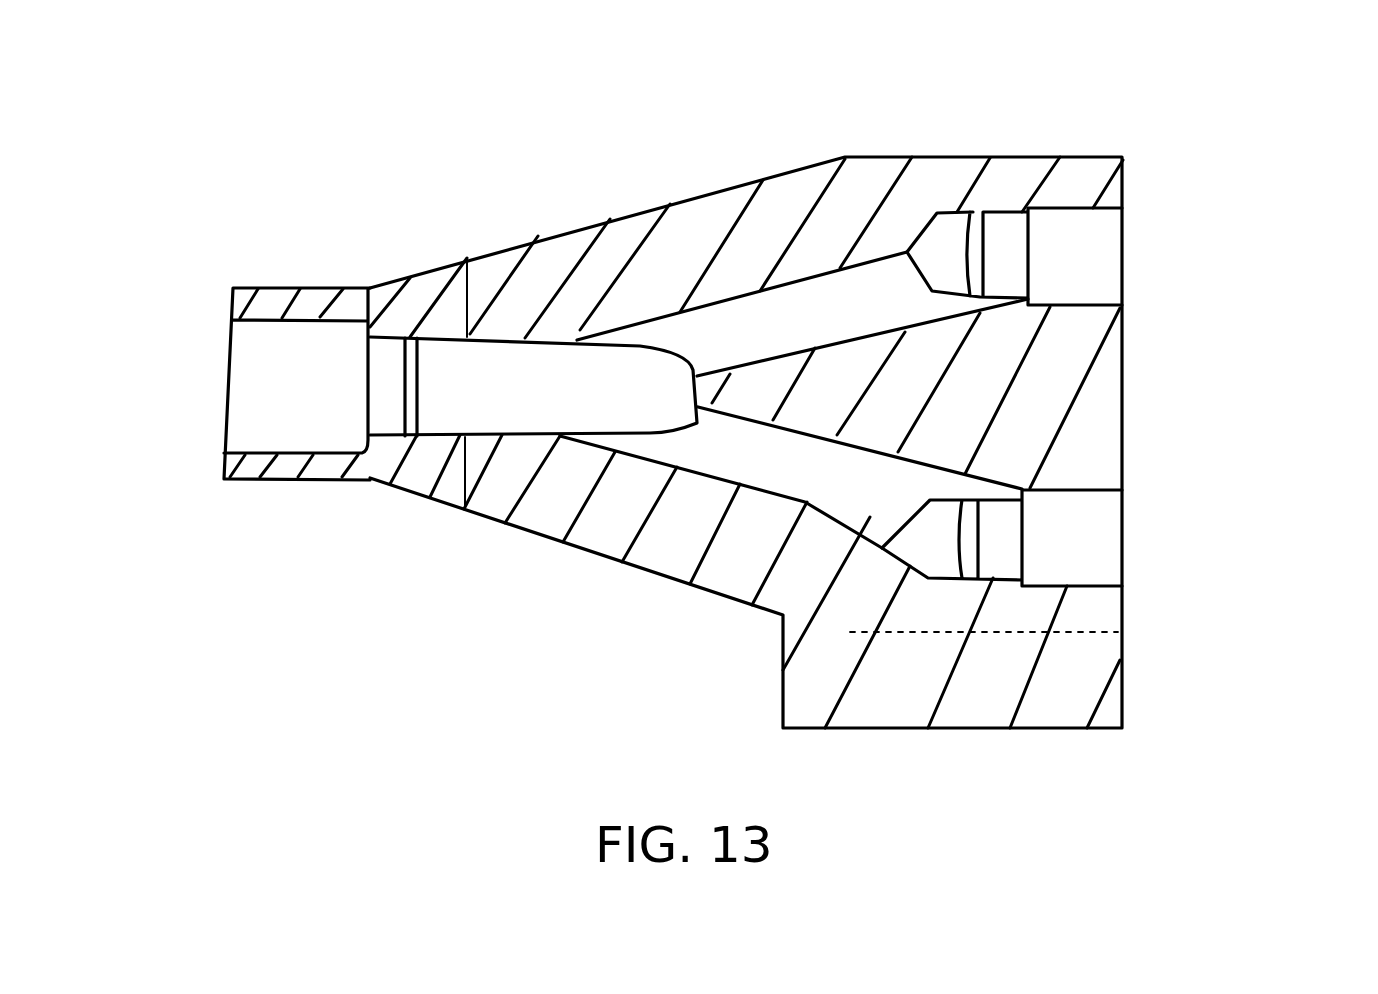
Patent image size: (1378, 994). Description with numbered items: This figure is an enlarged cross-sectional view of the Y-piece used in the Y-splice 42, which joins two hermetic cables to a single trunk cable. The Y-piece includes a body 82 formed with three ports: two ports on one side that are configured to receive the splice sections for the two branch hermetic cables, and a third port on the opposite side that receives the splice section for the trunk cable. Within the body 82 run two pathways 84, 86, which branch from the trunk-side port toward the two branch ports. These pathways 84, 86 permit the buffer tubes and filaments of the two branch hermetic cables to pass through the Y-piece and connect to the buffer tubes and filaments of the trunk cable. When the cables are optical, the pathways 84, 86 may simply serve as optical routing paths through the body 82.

The Y-splice 42 is at (1058, 110).
The body 82 is at (965, 708).
The pathway 84 is at (723, 340).
The pathway 86 is at (748, 447).